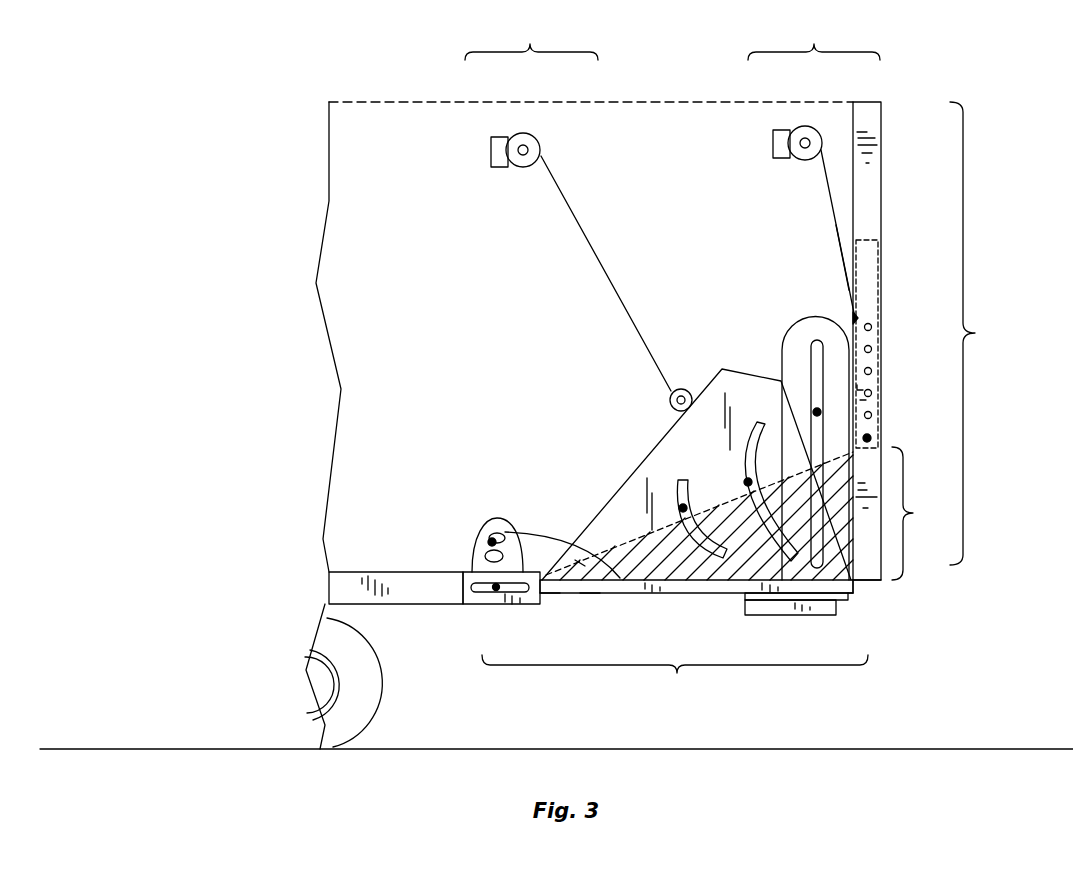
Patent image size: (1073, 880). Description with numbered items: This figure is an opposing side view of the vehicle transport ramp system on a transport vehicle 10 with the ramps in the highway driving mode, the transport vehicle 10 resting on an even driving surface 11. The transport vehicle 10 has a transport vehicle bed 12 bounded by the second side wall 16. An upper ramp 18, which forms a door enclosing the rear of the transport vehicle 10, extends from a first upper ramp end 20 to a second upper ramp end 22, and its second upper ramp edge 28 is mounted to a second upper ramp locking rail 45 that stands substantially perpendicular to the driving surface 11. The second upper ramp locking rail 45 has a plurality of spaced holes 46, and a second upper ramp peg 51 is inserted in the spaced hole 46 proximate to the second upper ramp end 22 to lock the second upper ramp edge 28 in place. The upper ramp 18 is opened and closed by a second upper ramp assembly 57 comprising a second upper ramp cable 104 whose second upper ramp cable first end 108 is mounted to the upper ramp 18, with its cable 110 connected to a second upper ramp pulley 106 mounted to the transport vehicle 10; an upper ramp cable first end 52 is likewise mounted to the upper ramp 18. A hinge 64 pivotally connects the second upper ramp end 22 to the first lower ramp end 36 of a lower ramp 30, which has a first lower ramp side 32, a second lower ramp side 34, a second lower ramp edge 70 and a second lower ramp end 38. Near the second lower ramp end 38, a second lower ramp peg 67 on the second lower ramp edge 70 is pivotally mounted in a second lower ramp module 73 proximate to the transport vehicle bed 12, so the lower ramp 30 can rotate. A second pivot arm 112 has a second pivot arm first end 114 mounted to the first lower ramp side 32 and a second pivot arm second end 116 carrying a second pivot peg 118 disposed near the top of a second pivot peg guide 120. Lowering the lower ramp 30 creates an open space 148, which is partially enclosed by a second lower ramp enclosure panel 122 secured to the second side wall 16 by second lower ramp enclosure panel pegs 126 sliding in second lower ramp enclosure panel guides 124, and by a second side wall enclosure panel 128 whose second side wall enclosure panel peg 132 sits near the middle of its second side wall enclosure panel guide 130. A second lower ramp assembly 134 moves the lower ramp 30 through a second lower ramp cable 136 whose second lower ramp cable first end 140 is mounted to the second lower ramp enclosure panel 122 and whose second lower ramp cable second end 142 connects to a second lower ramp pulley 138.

The transport vehicle 10 is at (350, 70).
The driving surface 11 is at (940, 748).
The transport vehicle bed 12 is at (370, 570).
The second side wall 16 is at (373, 425).
The upper ramp 18 is at (925, 381).
The first upper ramp end 20 is at (878, 240).
The second upper ramp end 22 is at (862, 582).
The second upper ramp edge 28 is at (866, 265).
The lower ramp 30 is at (660, 639).
The first lower ramp side 32 is at (632, 593).
The second lower ramp side 34 is at (590, 593).
The first lower ramp end 36 is at (868, 600).
The second lower ramp end 38 is at (552, 596).
The second upper ramp locking rail 45 is at (882, 130).
The spaced holes 46 is at (870, 417).
The second upper ramp peg 51 is at (872, 436).
The upper ramp cable first end 52 is at (866, 318).
The second upper ramp assembly 57 is at (815, 171).
The hinge 64 is at (858, 590).
The second lower ramp peg 67 is at (497, 590).
The second lower ramp edge 70 is at (763, 590).
The second lower ramp module 73 is at (480, 592).
The second upper ramp cable 104 is at (828, 172).
The second upper ramp pulley 106 is at (778, 131).
The second upper ramp cable first end 108 is at (843, 262).
The second upper ramp cable 110 is at (823, 148).
The second pivot arm 112 is at (543, 540).
The second pivot arm first end 114 is at (583, 563).
The second pivot arm second end 116 is at (512, 523).
The second pivot peg 118 is at (490, 540).
The second pivot peg guide 120 is at (488, 556).
The second lower ramp enclosure panel 122 is at (662, 438).
The second lower ramp enclosure panel guide 124 is at (743, 455).
The second lower ramp enclosure panel peg 126 is at (712, 597).
The second side wall enclosure panel 128 is at (800, 327).
The second side wall enclosure panel guide 130 is at (812, 357).
The second side wall enclosure panel peg 132 is at (815, 408).
The second lower ramp assembly 134 is at (565, 204).
The second lower ramp cable 136 is at (550, 168).
The second lower ramp pulley 138 is at (491, 137).
The second lower ramp cable first end 140 is at (672, 394).
The second lower ramp cable second end 142 is at (541, 150).
The open space 148 is at (906, 513).